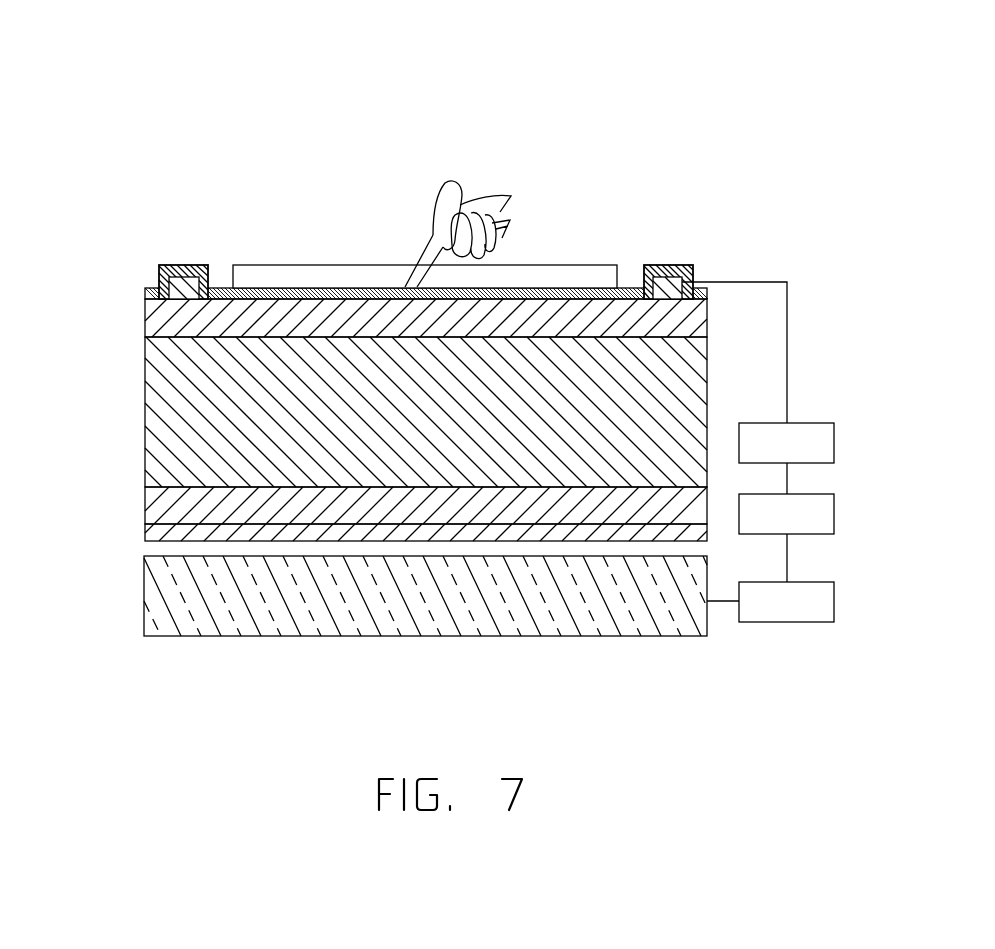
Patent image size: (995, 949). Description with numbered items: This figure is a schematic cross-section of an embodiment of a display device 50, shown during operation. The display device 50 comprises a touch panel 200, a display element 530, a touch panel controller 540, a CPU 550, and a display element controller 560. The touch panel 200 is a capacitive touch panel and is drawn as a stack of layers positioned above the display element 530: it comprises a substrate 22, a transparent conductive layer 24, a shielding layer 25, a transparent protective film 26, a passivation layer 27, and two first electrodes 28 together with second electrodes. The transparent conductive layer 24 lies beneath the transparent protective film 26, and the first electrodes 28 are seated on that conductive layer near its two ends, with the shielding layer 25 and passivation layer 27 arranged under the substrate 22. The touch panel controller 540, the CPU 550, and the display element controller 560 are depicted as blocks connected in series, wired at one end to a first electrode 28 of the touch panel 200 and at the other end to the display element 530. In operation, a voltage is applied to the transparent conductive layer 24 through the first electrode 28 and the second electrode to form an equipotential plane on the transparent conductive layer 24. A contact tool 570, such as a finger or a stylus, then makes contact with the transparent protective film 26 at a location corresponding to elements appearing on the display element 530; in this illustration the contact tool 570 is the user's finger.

The display device 50 is at (382, 38).
The touch panel 200 is at (61, 245).
The substrate 22 is at (157, 392).
The transparent conductive layer 24 is at (152, 312).
The shielding layer 25 is at (160, 504).
The transparent protective film 26 is at (145, 292).
The passivation layer 27 is at (157, 532).
The first electrode 28 is at (160, 270).
The display element 530 is at (163, 620).
The touch panel controller 540 is at (834, 442).
The CPU 550 is at (834, 513).
The display element controller 560 is at (834, 601).
The contact tool 570 is at (436, 209).